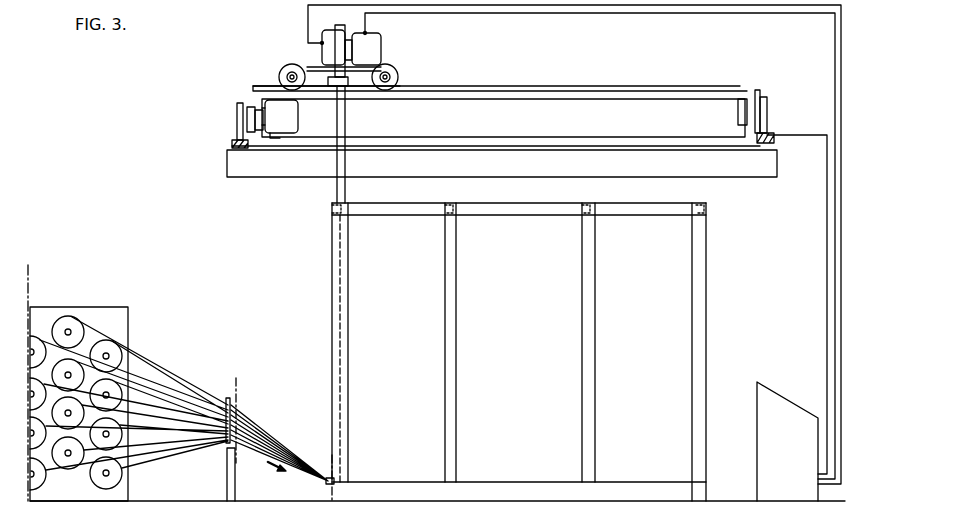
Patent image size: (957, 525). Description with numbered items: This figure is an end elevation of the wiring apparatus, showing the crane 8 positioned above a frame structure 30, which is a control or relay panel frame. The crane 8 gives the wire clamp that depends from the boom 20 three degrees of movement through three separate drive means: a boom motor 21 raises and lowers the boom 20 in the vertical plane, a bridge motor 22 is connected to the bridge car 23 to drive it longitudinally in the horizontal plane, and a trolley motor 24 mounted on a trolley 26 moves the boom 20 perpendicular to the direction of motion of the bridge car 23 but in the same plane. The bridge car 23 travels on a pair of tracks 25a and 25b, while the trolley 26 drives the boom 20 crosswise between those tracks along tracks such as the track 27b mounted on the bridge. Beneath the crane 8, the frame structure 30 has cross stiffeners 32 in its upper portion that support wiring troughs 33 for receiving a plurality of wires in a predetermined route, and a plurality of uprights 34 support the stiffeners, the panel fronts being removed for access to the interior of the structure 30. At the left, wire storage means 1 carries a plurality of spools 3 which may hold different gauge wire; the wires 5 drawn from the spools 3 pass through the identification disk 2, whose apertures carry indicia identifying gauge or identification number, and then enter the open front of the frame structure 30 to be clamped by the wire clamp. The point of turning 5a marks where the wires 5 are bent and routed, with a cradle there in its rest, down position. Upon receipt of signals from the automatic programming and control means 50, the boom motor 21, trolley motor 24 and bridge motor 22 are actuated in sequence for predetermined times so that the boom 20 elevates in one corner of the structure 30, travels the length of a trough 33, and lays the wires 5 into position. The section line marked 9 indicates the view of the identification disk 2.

The wire storage means 1 is at (103, 306).
The identification disk 2 is at (225, 437).
The spools 3 is at (36, 342).
The wires 5 is at (267, 446).
The point of turning 5a is at (341, 480).
The crane 8 is at (252, 87).
The section line 9- 9 is at (236, 378).
The boom 20 is at (336, 185).
The boom motor 21 is at (376, 52).
The bridge motor 22 is at (283, 121).
The bridge car 23 is at (478, 98).
The trolley motor 24 is at (322, 45).
The track 25a is at (236, 140).
The track 25b is at (820, 119).
The trolley 26 is at (312, 70).
The track 27b is at (655, 66).
The frame structure 30 is at (521, 340).
The cross stiffeners 32 is at (533, 206).
The wiring troughs 33 is at (448, 205).
The uprights 34 is at (332, 272).
The automatic programming and control means 50 is at (795, 446).